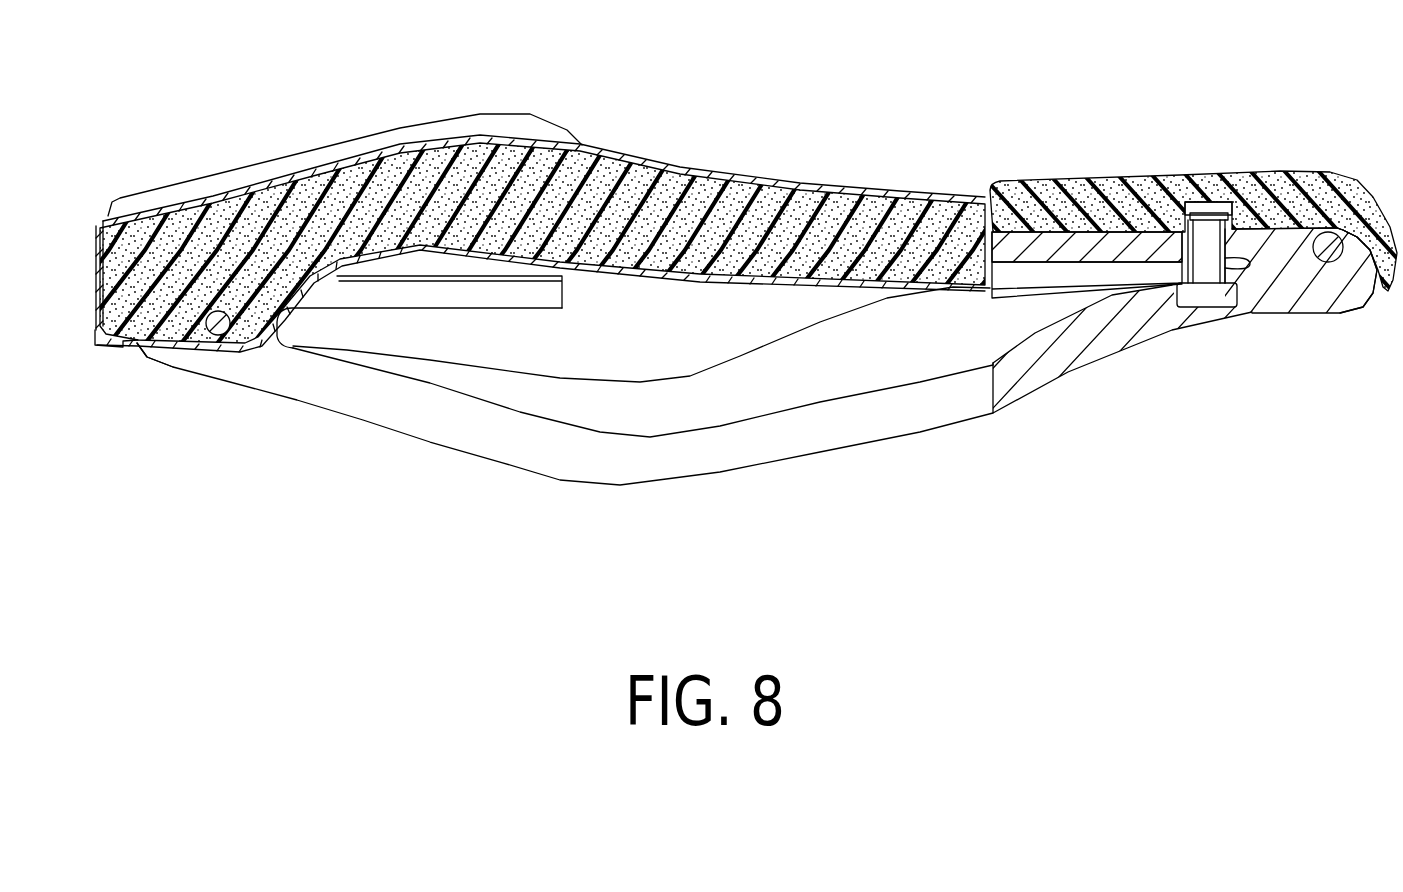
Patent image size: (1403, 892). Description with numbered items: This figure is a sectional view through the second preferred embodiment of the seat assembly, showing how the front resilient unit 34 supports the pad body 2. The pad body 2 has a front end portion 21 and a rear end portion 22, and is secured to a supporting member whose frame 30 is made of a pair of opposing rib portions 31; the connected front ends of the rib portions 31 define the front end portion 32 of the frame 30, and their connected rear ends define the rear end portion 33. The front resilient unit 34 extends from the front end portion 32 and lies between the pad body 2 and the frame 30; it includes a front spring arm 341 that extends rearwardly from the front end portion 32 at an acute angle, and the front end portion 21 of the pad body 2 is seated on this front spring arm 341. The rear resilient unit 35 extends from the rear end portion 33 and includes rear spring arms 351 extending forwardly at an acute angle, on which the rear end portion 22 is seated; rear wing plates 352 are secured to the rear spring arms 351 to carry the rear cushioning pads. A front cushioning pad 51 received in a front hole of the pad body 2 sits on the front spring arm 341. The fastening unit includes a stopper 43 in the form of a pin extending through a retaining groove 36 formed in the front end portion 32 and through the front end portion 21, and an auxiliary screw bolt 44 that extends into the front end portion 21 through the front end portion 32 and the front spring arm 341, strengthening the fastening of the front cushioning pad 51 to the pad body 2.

The pad body 2 is at (795, 172).
The rear end portion of the pad body 22 is at (213, 257).
The stopper 43 is at (1324, 238).
The front spring arm 341 is at (1080, 247).
The front end portion of the pad body 21 is at (1098, 275).
The front cushioning pad 51 is at (1203, 207).
The auxiliary screw bolt 44 is at (1190, 300).
The front end portion of the frame 32 is at (1321, 315).
The retaining groove 36 is at (1342, 265).
The front resilient unit 34 is at (1031, 267).
The rear wing plate 352 is at (354, 282).
The rear spring arm 351 is at (421, 306).
The rear resilient unit 35 is at (513, 310).
The frame 30 is at (732, 490).
The rib portion 31 is at (676, 478).
The rear end portion of the frame 33 is at (178, 368).